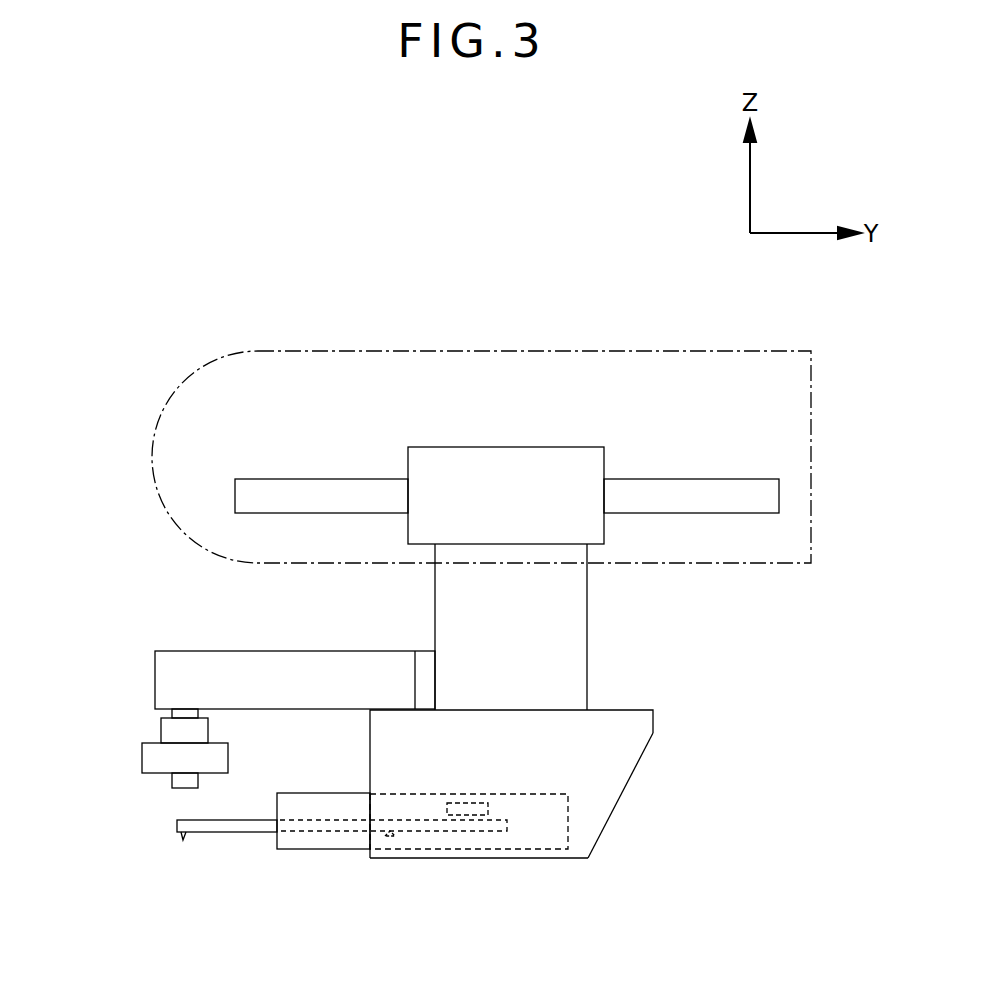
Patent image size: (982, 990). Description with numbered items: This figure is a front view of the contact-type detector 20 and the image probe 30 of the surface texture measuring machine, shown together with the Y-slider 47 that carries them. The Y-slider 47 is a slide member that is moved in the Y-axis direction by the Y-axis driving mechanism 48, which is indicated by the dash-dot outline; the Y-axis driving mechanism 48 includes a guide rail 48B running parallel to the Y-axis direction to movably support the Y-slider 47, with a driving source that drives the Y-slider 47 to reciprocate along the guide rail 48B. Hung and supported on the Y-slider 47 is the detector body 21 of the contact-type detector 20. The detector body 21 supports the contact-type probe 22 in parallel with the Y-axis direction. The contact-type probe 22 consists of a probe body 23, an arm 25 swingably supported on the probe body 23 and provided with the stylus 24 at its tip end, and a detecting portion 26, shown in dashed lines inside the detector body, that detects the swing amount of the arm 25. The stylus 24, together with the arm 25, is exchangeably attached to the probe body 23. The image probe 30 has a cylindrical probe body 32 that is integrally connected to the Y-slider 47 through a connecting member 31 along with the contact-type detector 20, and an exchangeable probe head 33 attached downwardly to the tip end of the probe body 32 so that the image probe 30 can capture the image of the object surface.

The contact-type detector 20 is at (625, 755).
The detector body 21 is at (593, 823).
The contact-type probe 22 is at (368, 886).
The probe body 23 is at (303, 849).
The stylus 24 is at (183, 840).
The arm 25 is at (242, 832).
The detecting portion 26 is at (469, 863).
The image probe 30 is at (246, 625).
The connecting member 31 is at (426, 660).
The probe body 32 is at (250, 660).
The probe head 33 is at (142, 758).
The Y-slider 47 is at (525, 544).
The Y-axis driving mechanism 48 is at (661, 361).
The guide rail 48B is at (683, 479).